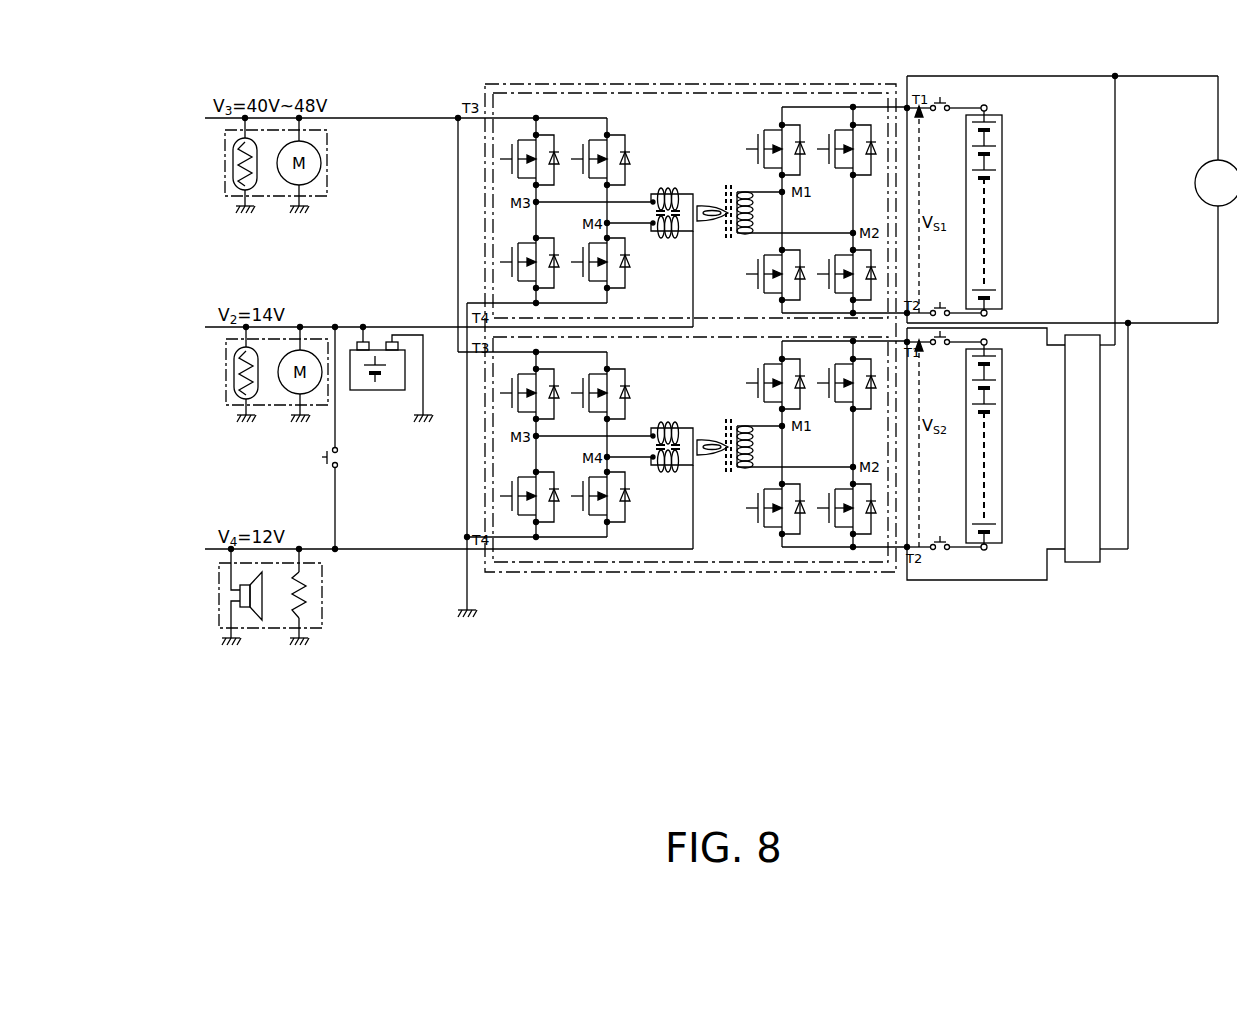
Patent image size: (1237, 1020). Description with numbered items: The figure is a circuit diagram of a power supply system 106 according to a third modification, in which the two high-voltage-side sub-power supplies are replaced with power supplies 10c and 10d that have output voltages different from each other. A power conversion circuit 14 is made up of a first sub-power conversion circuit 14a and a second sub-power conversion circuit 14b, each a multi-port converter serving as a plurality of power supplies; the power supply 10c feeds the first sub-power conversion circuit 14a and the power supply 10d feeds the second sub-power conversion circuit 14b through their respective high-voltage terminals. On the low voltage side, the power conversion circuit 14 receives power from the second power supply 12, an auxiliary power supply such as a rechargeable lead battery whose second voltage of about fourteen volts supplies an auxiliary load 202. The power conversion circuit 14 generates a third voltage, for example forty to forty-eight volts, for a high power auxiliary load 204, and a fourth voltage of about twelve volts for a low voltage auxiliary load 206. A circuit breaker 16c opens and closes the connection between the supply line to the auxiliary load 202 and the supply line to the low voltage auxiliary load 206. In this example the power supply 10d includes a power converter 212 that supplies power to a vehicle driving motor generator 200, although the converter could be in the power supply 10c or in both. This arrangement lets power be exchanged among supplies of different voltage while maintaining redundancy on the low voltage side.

The power conversion circuit 14 is at (687, 330).
The first sub-power conversion circuit 14a is at (548, 97).
The second sub-power conversion circuit 14b is at (546, 557).
The power supply 10c is at (1003, 146).
The power supply 10d is at (1003, 430).
The second power supply 12 is at (385, 392).
The circuit breaker 16c is at (340, 458).
The motor generator 200 is at (1201, 167).
The auxiliary load 202 is at (224, 370).
The high power auxiliary load 204 is at (225, 160).
The low voltage auxiliary load 206 is at (219, 590).
The power converter 212 is at (1083, 562).
The power supply system 106 is at (680, 757).